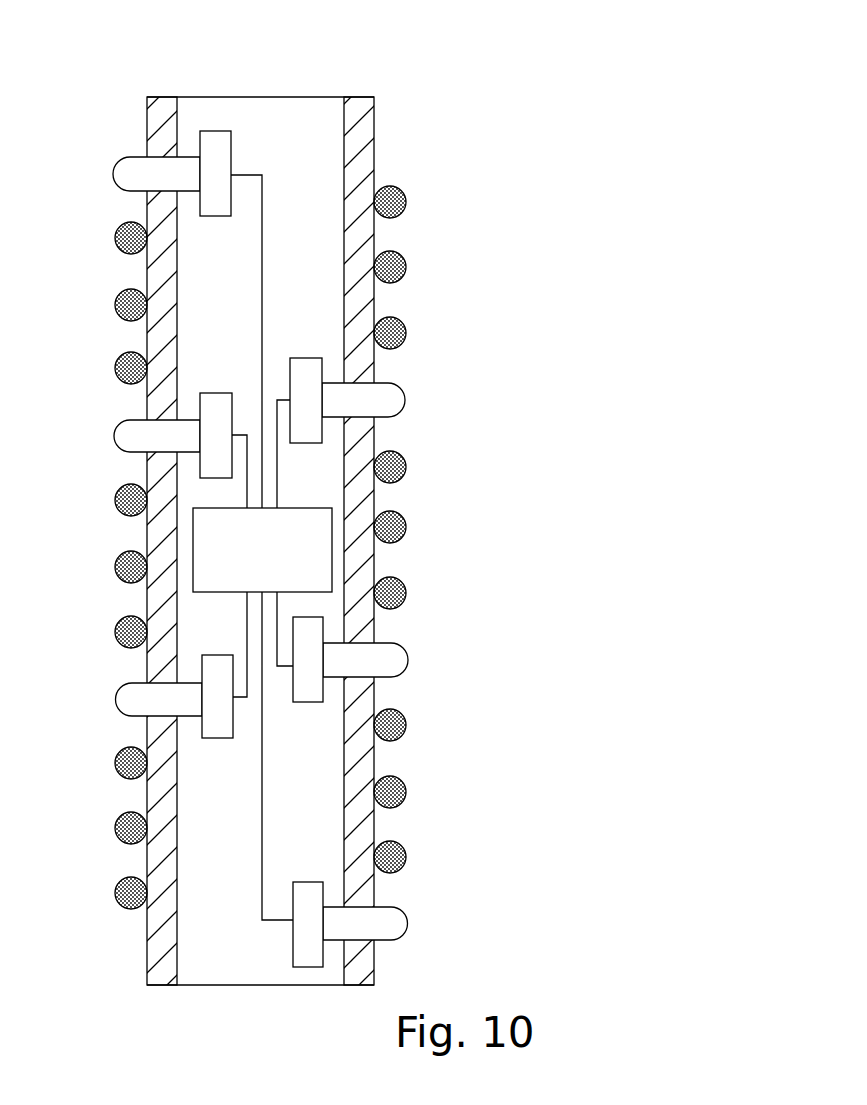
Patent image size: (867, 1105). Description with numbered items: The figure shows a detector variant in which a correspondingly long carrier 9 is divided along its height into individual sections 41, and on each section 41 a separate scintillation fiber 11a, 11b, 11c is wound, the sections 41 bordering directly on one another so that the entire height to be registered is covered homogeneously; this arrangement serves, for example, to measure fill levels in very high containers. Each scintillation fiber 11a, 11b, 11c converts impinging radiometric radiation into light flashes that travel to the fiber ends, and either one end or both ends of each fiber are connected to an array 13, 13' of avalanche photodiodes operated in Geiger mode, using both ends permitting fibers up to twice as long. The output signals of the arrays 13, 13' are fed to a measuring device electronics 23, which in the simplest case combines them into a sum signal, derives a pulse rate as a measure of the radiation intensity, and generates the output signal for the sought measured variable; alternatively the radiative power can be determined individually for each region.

The carrier 9 is at (372, 137).
The scintillation fiber 11a is at (405, 795).
The scintillation fiber 11b is at (395, 664).
The scintillation fiber 11c is at (393, 402).
The array of avalanche photodiodes 13 is at (384, 654).
The array of avalanche photodiodes 13' is at (145, 375).
The measuring device electronics 23 is at (275, 563).
The section of carrier 41 is at (91, 160).